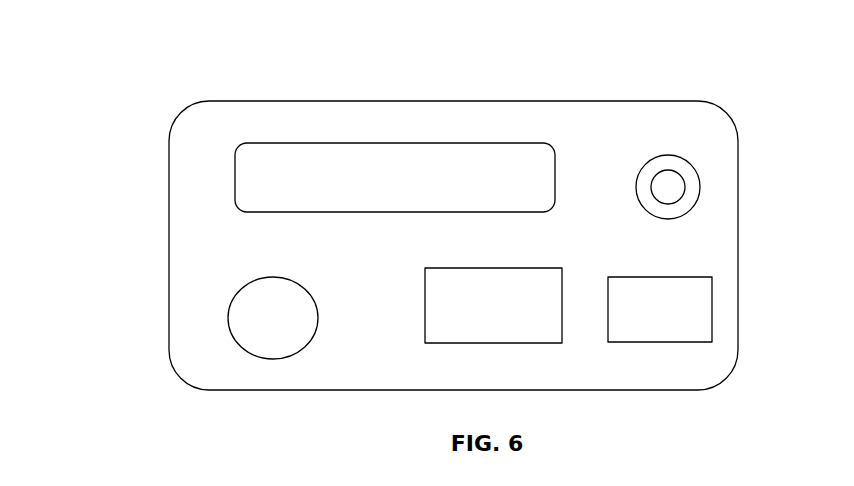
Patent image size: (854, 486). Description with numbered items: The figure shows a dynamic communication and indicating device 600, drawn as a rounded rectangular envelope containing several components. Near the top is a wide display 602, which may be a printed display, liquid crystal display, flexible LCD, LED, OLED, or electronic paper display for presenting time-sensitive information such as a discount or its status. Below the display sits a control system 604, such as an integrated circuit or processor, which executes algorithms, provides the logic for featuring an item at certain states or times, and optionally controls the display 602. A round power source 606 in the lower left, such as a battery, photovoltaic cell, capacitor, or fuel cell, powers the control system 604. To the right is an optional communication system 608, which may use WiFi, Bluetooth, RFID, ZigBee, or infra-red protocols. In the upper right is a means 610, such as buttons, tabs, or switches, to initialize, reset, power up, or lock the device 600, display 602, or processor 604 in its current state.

The dynamic communication and indicating device 600 is at (157, 115).
The display 602 is at (465, 170).
The control system 604 is at (543, 332).
The power source 606 is at (262, 329).
The communication system 608 is at (700, 318).
The means to initialize, reset, power up, and/or lock 610 is at (668, 188).